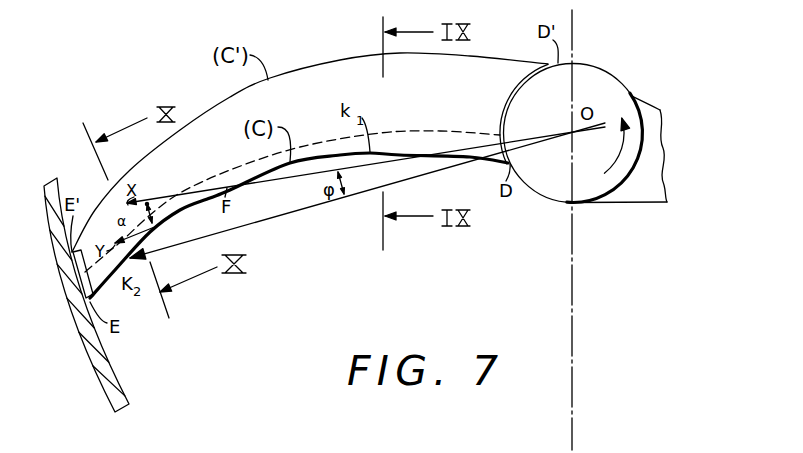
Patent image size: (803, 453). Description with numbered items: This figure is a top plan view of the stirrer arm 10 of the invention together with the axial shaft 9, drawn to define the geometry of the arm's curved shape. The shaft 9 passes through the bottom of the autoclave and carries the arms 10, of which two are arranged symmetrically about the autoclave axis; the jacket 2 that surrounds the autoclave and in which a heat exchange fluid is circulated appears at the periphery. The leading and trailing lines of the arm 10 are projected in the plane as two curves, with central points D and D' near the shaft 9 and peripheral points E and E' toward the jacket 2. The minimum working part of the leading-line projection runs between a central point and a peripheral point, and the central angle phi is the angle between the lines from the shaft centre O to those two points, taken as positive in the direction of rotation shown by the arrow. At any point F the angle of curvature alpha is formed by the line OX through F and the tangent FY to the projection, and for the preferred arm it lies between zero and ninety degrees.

The jacket 2 is at (112, 372).
The shaft 9 is at (558, 180).
The arm 10 is at (100, 192).